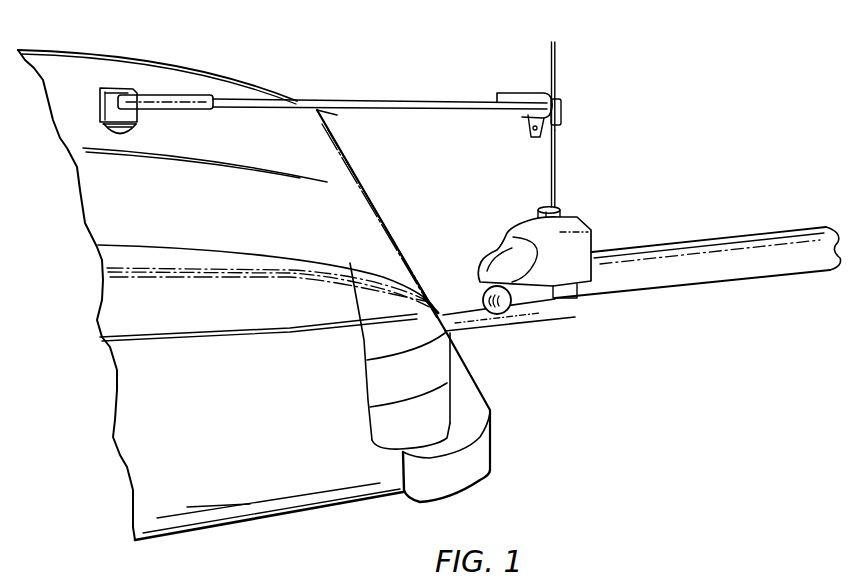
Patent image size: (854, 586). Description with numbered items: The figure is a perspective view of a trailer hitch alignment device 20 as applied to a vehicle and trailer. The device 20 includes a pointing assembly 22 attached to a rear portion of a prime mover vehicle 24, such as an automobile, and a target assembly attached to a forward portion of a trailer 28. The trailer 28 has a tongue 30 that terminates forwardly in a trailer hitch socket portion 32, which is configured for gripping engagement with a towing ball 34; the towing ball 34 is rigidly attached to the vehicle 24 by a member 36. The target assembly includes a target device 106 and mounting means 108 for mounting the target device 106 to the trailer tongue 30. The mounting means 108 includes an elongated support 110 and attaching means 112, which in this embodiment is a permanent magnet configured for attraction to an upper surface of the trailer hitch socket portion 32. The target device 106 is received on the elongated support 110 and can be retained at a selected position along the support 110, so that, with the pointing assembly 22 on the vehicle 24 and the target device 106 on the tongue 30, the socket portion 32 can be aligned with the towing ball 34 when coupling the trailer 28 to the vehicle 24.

The trailer hitch alignment device 20 is at (449, 89).
The pointing assembly 22 is at (228, 98).
The prime mover vehicle 24 is at (185, 65).
The trailer 28 is at (719, 223).
The tongue 30 is at (627, 252).
The trailer hitch socket portion 32 is at (558, 268).
The towing ball 34 is at (509, 299).
The member 36 is at (462, 312).
The target device 106 is at (543, 138).
The mounting means 108 is at (556, 170).
The elongated support 110 is at (555, 72).
The attaching means 112 is at (553, 208).